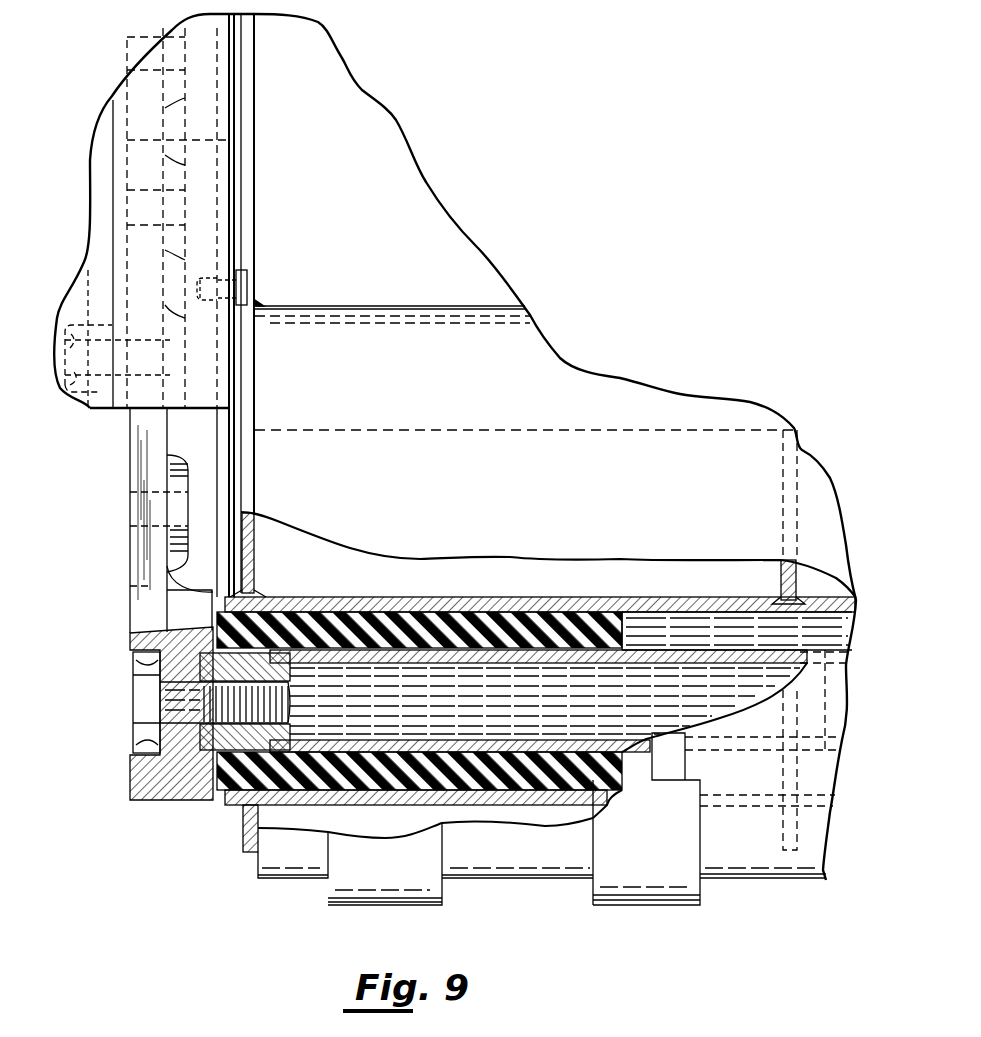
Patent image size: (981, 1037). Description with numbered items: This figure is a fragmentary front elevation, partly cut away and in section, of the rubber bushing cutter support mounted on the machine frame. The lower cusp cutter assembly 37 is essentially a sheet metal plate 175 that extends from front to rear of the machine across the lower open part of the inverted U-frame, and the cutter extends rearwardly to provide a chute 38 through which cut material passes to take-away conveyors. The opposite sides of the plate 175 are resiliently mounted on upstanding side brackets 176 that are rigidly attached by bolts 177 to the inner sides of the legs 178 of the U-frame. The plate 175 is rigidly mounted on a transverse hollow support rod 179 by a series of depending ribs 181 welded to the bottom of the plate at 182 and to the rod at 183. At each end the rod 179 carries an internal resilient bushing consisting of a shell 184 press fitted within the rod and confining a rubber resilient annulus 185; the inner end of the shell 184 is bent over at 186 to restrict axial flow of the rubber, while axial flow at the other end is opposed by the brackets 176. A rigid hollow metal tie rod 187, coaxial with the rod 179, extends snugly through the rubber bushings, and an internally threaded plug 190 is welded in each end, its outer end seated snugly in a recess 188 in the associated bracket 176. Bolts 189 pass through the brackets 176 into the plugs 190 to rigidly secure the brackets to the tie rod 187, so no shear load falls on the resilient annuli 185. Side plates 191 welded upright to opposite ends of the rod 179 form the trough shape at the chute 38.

The lower cusp cutter assembly 37 is at (487, 256).
The chute 38 is at (245, 203).
The sheet metal plate 175 is at (678, 412).
The side bracket 176 is at (150, 440).
The bolt 177 is at (74, 398).
The leg 178 is at (104, 410).
The transverse hollow support rod 179 is at (688, 609).
The depending rib 181 is at (780, 560).
The weld to plate 182 is at (801, 425).
The weld to rod 183 is at (778, 600).
The shell 184 is at (487, 605).
The resilient annulus 185 is at (560, 612).
The bent-over inner end of shell 186 is at (627, 630).
The hollow metal tie rod 187 is at (645, 662).
The recess 188 is at (212, 620).
The bolt 189 is at (143, 697).
The internally threaded plug 190 is at (283, 733).
The side plate 191 is at (243, 480).